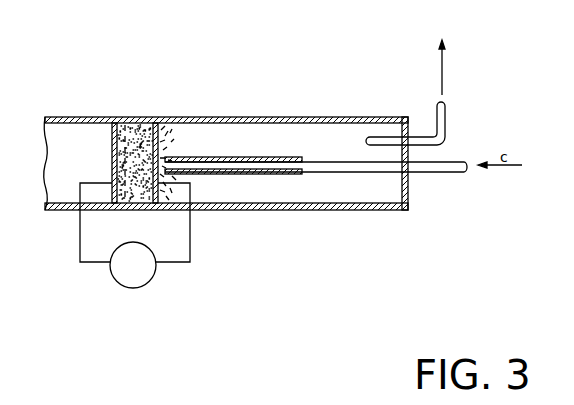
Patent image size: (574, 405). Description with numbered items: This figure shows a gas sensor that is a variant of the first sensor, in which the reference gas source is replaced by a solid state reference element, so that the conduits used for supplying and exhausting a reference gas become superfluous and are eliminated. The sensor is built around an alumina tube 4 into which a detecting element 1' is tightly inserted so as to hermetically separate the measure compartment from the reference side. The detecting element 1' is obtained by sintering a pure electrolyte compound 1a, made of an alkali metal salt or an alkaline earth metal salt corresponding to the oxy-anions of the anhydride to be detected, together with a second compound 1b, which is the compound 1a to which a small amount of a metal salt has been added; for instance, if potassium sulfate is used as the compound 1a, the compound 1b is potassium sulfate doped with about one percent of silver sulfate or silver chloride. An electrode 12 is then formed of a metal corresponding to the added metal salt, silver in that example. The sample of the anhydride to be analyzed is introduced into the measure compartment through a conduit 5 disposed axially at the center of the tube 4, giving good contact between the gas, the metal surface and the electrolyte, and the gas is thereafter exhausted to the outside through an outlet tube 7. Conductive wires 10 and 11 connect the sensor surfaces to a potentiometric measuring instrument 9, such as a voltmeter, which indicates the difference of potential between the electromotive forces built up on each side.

The detecting element 1' is at (163, 135).
The pure electrolyte compound 1a is at (140, 138).
The second compound 1b is at (123, 132).
The tube 4 is at (404, 211).
The conduit 5 is at (448, 165).
The outlet tube 7 is at (445, 120).
The potentiometric measuring instrument 9 is at (131, 288).
The conductive wire 10 is at (191, 249).
The conductive wire 11 is at (80, 232).
The electrode 12 is at (112, 145).